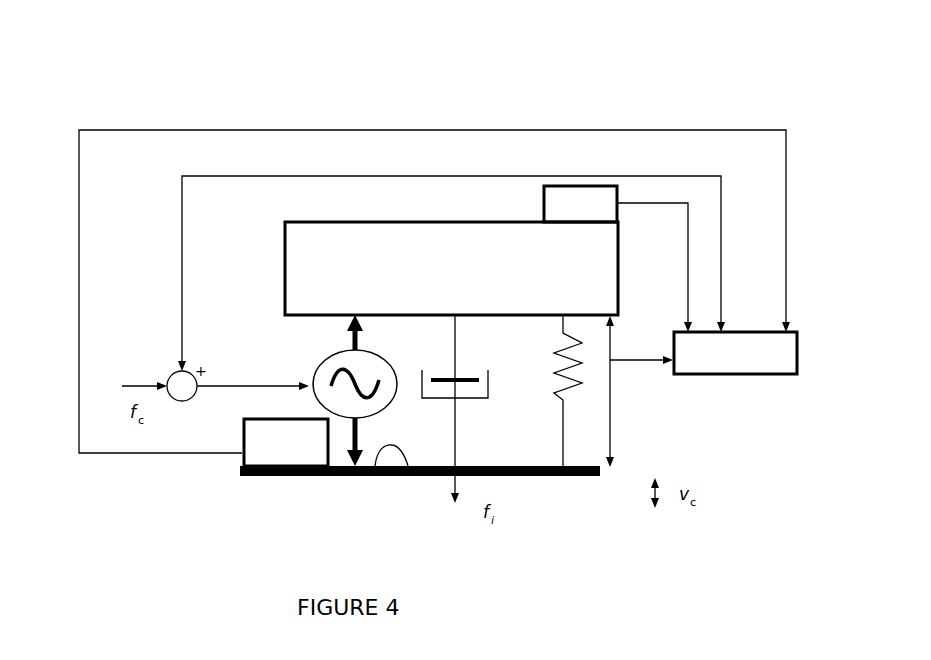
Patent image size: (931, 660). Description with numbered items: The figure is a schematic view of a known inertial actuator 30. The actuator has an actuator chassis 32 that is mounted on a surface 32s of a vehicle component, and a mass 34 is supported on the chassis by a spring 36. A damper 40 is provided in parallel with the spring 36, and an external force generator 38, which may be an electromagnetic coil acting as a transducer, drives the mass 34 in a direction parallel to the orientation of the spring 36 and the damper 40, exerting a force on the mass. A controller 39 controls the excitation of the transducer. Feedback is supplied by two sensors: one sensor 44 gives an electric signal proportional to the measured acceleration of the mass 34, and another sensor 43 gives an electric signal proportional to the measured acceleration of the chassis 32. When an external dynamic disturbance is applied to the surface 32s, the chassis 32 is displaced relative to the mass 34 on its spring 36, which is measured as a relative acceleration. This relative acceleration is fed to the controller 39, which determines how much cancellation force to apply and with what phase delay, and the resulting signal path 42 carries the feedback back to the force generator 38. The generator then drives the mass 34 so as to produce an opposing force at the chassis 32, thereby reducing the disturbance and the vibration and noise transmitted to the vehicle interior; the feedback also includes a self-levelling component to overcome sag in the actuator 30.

The inertial actuator 30 is at (366, 141).
The actuator chassis 32 is at (540, 476).
The surface 32s is at (401, 456).
The mass 34 is at (451, 268).
The spring 36 is at (575, 399).
The external force generator 38 is at (312, 398).
The controller 39 is at (703, 353).
The damper 40 is at (474, 400).
The feedback loop 42 is at (660, 177).
The sensor 43 is at (295, 443).
The sensor 44 is at (618, 259).